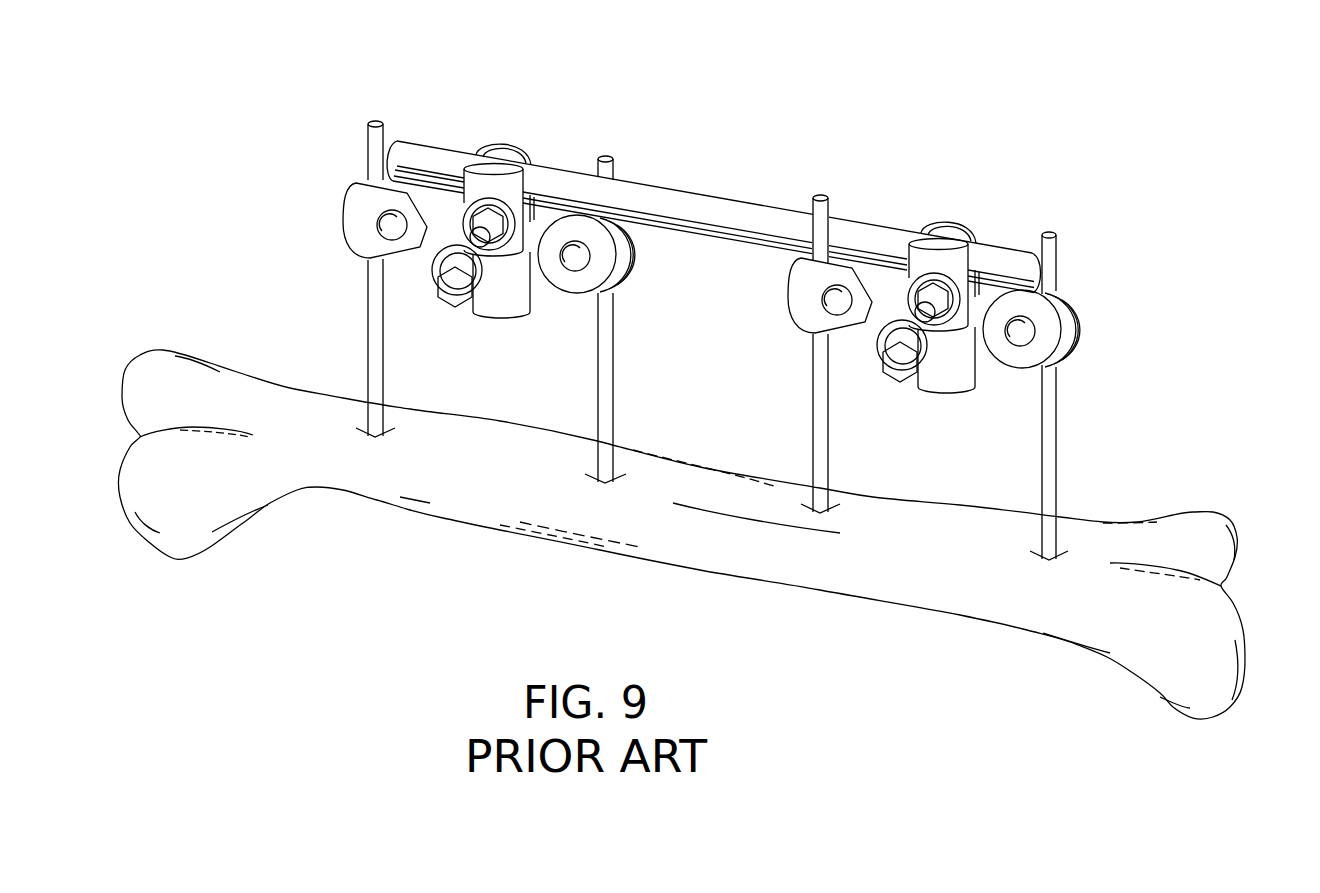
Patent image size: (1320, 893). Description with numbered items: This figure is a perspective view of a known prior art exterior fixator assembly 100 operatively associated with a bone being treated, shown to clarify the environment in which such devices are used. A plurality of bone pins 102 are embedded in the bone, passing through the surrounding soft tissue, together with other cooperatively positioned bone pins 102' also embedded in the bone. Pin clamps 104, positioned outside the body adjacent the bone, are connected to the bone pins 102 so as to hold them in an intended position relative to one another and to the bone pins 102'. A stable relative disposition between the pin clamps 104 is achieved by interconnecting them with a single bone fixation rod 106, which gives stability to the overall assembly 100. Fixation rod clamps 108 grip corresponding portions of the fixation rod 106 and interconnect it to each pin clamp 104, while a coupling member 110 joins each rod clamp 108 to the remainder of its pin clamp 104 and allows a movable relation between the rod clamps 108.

The exterior fixator assembly 100 is at (1117, 212).
The bone pins 102 is at (936, 377).
The bone pins 102' is at (676, 319).
The pin clamps 104 is at (1110, 340).
The bone fixation rod 106 is at (733, 187).
The fixation rod clamps 108 is at (503, 143).
The coupling member 110 is at (540, 301).